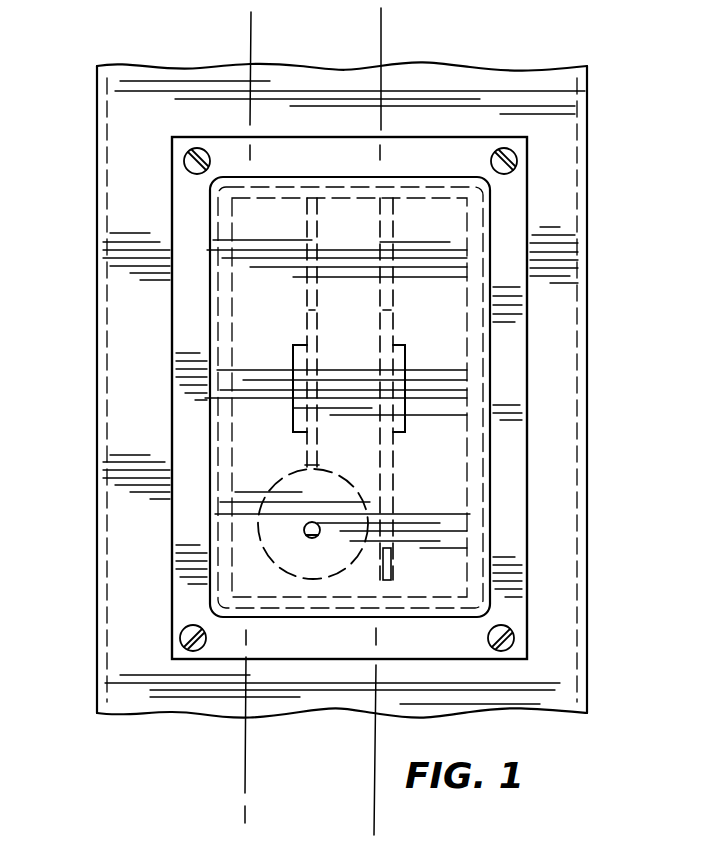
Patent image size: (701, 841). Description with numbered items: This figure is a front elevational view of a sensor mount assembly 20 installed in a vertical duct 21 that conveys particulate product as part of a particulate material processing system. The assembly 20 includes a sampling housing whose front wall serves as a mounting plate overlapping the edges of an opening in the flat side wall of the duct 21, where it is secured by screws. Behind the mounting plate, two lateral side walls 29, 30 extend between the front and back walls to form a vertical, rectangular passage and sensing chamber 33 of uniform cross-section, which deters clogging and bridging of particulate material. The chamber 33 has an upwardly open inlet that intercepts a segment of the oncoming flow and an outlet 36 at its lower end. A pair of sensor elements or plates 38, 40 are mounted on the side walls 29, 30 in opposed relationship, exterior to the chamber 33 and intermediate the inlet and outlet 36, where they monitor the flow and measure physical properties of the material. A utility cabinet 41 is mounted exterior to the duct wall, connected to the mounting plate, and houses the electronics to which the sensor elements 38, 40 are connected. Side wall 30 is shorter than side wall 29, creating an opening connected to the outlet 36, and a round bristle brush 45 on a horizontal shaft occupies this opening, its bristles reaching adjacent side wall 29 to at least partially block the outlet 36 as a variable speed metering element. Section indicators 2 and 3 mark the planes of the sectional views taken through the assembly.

The sensor mount assembly 20 is at (542, 392).
The vertical duct 21 is at (590, 91).
The third lateral side wall 29 is at (393, 250).
The fourth lateral side wall 30 is at (305, 323).
The sensing chamber 33 is at (380, 307).
The outlet 36 is at (327, 642).
The sensor element 38 is at (400, 373).
The sensor element 40 is at (305, 402).
The utility cabinet 41 is at (212, 213).
The bristle brush 45 is at (265, 520).
The section line 2- 2 is at (305, 25).
The section line 3- 3 is at (330, 25).